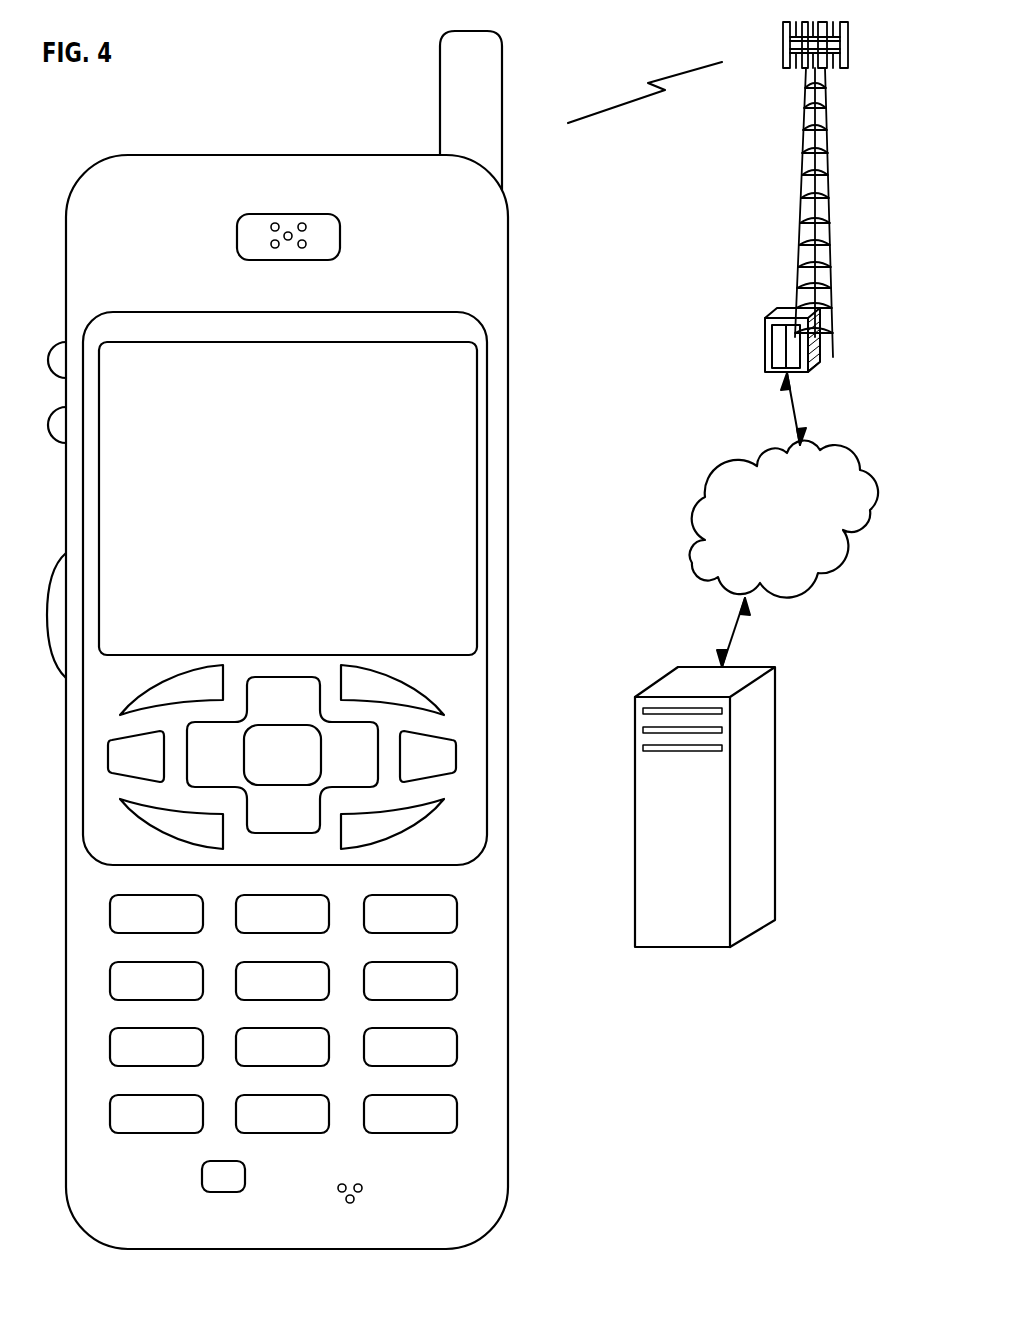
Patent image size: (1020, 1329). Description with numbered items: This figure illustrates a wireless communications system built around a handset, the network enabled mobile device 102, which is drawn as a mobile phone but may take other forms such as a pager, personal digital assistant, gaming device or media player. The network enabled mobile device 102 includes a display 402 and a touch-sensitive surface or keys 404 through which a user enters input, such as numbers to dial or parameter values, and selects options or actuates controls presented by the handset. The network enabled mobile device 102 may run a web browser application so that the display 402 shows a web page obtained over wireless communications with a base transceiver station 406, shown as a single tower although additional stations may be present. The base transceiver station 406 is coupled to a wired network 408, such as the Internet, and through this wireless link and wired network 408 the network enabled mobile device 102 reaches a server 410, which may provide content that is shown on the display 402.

The network enabled mobile device 102 is at (130, 1249).
The display 402 is at (478, 357).
The keys 404 is at (513, 1150).
The base transceiver station 406 is at (802, 211).
The wired network 408 is at (706, 578).
The server 410 is at (686, 947).